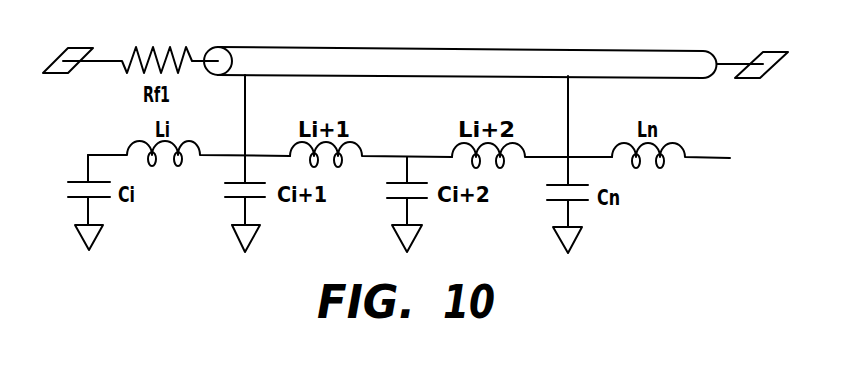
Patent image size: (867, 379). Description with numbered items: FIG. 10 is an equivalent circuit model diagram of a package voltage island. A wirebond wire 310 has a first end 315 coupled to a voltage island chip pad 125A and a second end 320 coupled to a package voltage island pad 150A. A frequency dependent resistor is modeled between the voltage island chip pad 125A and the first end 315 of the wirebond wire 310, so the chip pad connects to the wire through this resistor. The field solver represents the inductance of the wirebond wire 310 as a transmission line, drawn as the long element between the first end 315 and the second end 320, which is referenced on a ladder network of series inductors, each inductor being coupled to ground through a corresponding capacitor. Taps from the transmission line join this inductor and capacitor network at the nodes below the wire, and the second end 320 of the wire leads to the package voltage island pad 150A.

The voltage island chip pad 125A is at (63, 62).
The package voltage island pad 150A is at (757, 80).
The wirebond wire 310 is at (403, 70).
The first end 315 is at (237, 76).
The second end 320 is at (685, 70).